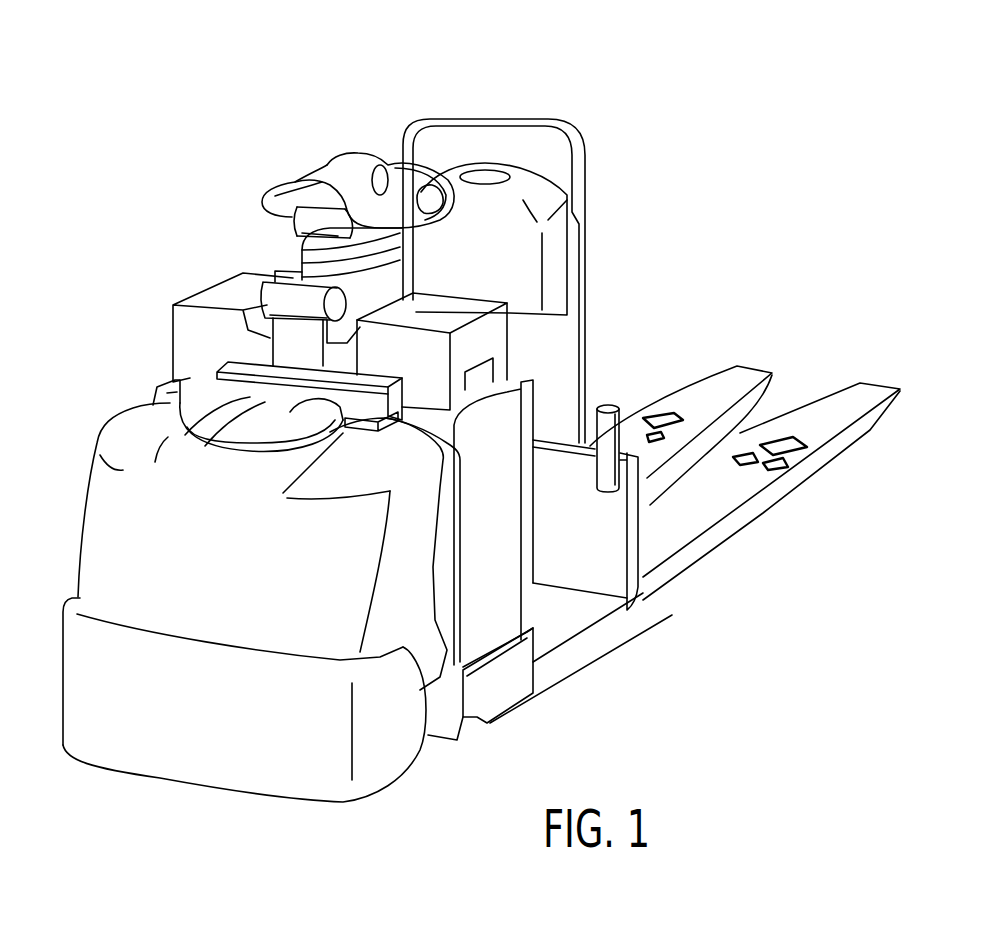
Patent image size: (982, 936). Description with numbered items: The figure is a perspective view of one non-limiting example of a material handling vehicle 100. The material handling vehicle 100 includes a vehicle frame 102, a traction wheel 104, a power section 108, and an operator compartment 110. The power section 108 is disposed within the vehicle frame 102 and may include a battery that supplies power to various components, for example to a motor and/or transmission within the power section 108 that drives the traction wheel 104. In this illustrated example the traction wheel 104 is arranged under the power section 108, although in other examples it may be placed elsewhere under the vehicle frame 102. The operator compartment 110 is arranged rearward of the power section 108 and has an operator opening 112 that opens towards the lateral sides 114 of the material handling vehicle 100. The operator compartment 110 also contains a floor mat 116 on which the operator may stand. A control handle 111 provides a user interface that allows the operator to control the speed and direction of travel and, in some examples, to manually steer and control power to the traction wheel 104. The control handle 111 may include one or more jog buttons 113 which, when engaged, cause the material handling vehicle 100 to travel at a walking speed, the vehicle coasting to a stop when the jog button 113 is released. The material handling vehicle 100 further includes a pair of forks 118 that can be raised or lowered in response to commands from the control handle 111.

The material handling vehicle 100 is at (148, 114).
The vehicle frame 102 is at (660, 327).
The traction wheel 104 is at (188, 808).
The power section 108 is at (56, 598).
The operator compartment 110 is at (507, 218).
The control handle 111 is at (297, 196).
The operator opening 112 is at (614, 566).
The jog button 113 is at (403, 172).
The lateral sides 114 is at (487, 573).
The floor mat 116 is at (550, 621).
The forks 118 is at (745, 373).